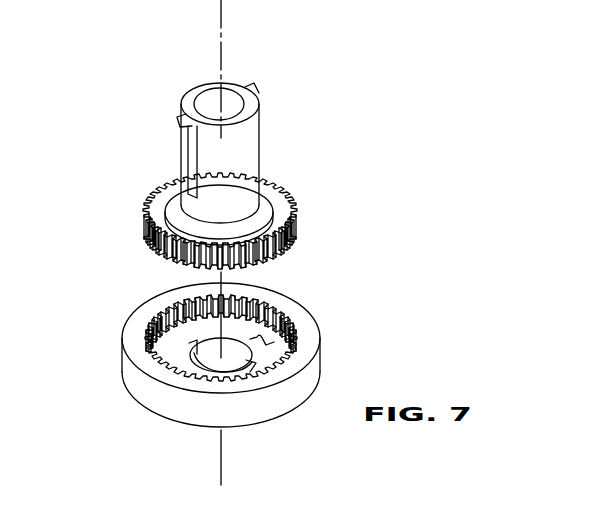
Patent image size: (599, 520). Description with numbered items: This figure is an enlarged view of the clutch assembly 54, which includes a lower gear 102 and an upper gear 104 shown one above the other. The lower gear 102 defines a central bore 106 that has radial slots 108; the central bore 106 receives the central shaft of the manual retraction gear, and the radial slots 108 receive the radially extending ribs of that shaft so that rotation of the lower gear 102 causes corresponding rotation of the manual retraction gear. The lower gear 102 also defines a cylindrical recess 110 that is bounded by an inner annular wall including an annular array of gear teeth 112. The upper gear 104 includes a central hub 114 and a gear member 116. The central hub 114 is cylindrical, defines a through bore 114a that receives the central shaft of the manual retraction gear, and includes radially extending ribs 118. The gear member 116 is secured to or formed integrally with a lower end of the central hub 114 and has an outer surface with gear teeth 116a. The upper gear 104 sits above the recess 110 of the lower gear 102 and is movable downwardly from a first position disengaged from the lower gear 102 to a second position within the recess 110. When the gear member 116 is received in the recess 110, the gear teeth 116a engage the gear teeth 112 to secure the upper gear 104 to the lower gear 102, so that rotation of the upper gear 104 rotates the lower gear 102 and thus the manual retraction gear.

The clutch assembly 54 is at (256, 242).
The lower gear 102 is at (236, 359).
The upper gear 104 is at (223, 115).
The central bore 106 is at (230, 356).
The radial slots 108 is at (192, 343).
The cylindrical recess 110 is at (263, 334).
The gear teeth 112 is at (167, 312).
The central hub 114 is at (196, 90).
The through bore 114a is at (233, 108).
The gear member 116 is at (206, 213).
The gear teeth 116a is at (145, 212).
The radially extending ribs 118 is at (243, 85).